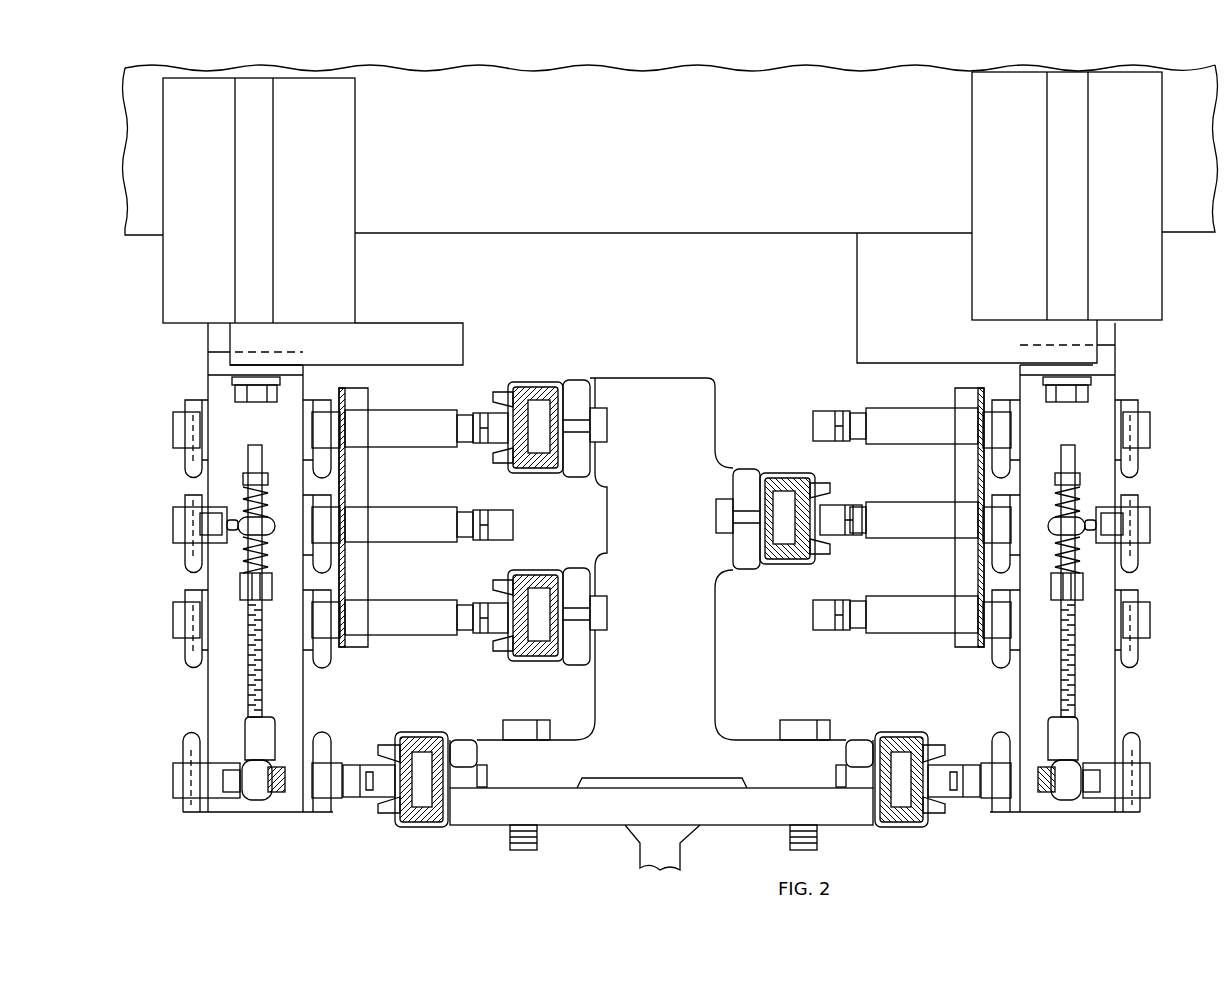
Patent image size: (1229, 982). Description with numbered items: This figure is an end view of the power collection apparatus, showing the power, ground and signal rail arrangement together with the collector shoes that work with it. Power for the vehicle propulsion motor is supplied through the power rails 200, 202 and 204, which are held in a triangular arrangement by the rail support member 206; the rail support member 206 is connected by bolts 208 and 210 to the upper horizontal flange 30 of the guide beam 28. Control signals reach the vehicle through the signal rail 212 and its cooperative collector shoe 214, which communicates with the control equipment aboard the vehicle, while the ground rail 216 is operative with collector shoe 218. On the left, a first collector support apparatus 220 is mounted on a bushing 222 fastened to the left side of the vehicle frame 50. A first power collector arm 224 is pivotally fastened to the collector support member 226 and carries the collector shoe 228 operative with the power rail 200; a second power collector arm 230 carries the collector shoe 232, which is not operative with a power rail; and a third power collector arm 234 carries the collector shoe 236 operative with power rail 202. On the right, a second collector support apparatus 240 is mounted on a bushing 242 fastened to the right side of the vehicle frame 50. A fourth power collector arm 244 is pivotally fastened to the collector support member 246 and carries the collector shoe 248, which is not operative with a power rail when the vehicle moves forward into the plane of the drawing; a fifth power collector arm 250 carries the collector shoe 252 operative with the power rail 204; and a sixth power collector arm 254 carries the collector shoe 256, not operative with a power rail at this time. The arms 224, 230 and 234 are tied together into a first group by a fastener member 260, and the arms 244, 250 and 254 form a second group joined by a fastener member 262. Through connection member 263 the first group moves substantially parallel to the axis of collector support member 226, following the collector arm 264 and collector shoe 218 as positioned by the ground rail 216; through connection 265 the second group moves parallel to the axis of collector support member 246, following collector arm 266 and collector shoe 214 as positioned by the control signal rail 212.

The guide beam 28 is at (608, 872).
The upper horizontal flange 30 is at (737, 825).
The vehicle frame 50 is at (705, 222).
The power rail 200 is at (523, 388).
The power rail 202 is at (520, 573).
The power rail 204 is at (768, 478).
The rail support member 206 is at (726, 362).
The bolt 208 is at (808, 722).
The bolt 210 is at (500, 722).
The signal rail 212 is at (930, 730).
The collector shoe 214 is at (948, 762).
The ground rail 216 is at (428, 732).
The collector shoe 218 is at (372, 765).
The first collector support apparatus 220 is at (158, 545).
The bushing 222 is at (455, 290).
The first power collector arm 224 is at (398, 417).
The collector support member 226 is at (215, 486).
The collector shoe 228 is at (474, 413).
The second power collector arm 230 is at (399, 510).
The collector shoe 232 is at (498, 492).
The third power collector arm 234 is at (398, 603).
The collector shoe 236 is at (480, 598).
The second collector support apparatus 240 is at (1203, 489).
The bushing 242 is at (865, 268).
The fourth power collector arm 244 is at (897, 415).
The collector support member 246 is at (1116, 383).
The collector shoe 248 is at (806, 412).
The fifth power collector arm 250 is at (912, 508).
The collector shoe 252 is at (842, 508).
The sixth power collector arm 254 is at (903, 598).
The collector shoe 256 is at (842, 584).
The fastener member 260 is at (358, 648).
The fastener member 262 is at (965, 645).
The connection member 263 is at (250, 690).
The collector arm 264 is at (337, 800).
The connection 265 is at (1078, 688).
The collector arm 266 is at (987, 795).